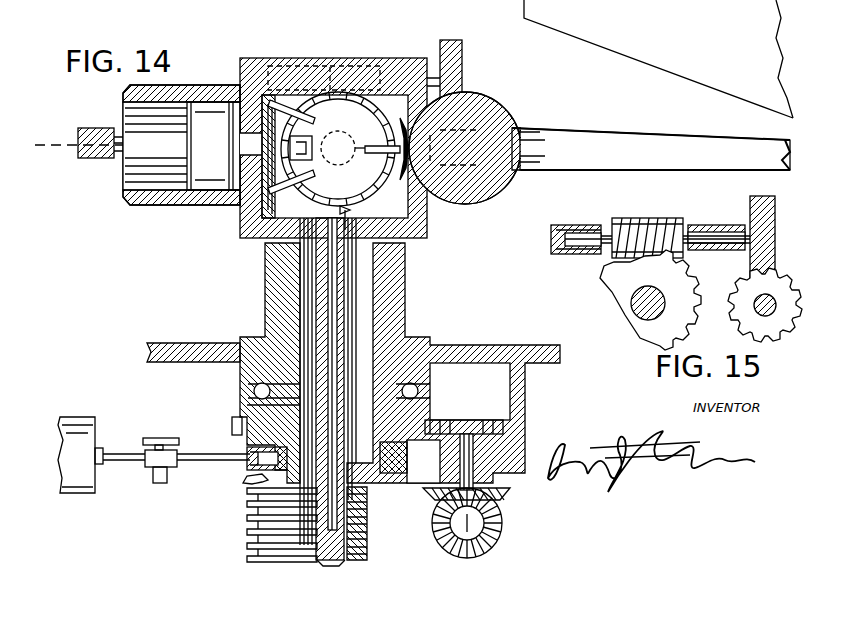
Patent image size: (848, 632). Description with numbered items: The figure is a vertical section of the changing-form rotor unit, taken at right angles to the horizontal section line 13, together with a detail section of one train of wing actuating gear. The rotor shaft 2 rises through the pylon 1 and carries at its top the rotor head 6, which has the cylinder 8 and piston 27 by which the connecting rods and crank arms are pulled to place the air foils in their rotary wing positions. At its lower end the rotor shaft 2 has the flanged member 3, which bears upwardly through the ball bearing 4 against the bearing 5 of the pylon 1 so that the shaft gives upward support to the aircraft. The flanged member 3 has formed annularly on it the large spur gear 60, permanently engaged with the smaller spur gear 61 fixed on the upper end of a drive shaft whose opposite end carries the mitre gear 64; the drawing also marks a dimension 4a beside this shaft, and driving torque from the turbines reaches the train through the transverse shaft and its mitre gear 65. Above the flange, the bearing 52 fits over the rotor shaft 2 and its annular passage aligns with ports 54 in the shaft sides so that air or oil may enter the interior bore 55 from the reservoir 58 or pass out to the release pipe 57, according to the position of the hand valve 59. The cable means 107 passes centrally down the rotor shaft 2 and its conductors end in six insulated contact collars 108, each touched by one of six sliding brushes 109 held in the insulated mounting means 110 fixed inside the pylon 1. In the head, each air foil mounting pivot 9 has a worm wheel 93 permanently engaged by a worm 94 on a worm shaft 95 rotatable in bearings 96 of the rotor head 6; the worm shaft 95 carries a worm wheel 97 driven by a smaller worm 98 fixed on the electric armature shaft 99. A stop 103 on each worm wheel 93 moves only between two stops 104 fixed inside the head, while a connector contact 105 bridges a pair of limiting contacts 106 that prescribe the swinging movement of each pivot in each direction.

In FIG. 14, the section line 13 is at (46, 136).
In FIG. 14, the cylinder 8 is at (152, 196).
In FIG. 14, the piston 27 is at (213, 146).
In FIG. 14, the rotor head 6 is at (240, 228).
In FIG. 14, the stops 104 is at (272, 108).
In FIG. 14, the worm shaft 95 is at (268, 72).
In FIG. 15, the worm shaft 95 is at (584, 228).
In FIG. 14, the worm 94 is at (318, 62).
In FIG. 15, the worm 94 is at (645, 216).
In FIG. 14, the limiting contacts 106 is at (344, 150).
In FIG. 14, the stop 103 is at (314, 147).
In FIG. 14, the connector contact 105 is at (369, 163).
In FIG. 14, the cable means 107 is at (340, 210).
In FIG. 14, the worm wheel 97 is at (464, 66).
In FIG. 15, the worm wheel 97 is at (764, 197).
In FIG. 14, the worm 98 is at (465, 204).
In FIG. 15, the worm 98 is at (736, 286).
In FIG. 14, the armature shaft 99 is at (510, 131).
In FIG. 15, the armature shaft 99 is at (752, 318).
In FIG. 14, the pylon 1 is at (265, 308).
In FIG. 14, the rotor shaft 2 is at (292, 270).
In FIG. 14, the interior bore 55 is at (410, 316).
In FIG. 14, the bearing 5 is at (248, 384).
In FIG. 14, the ball bearing 4 is at (253, 399).
In FIG. 14, the flanged member 3 is at (258, 412).
In FIG. 14, the spur gear 60 is at (232, 423).
In FIG. 14, the reservoir 58 is at (68, 440).
In FIG. 14, the hand valve 59 is at (160, 440).
In FIG. 14, the release pipe 57 is at (153, 476).
In FIG. 14, the bearing 52 is at (248, 452).
In FIG. 14, the insulated mounting means 110 is at (242, 476).
In FIG. 14, the sliding brushes 109 is at (250, 520).
In FIG. 14, the insulated contact collars 108 is at (368, 494).
In FIG. 14, the ports 54 is at (407, 450).
In FIG. 14, the spur gear 61 is at (493, 420).
In FIG. 14, the drive shaft 4a is at (465, 420).
In FIG. 14, the mitre gear 64 is at (506, 493).
In FIG. 14, the mitre gear 65 is at (500, 523).
In FIG. 15, the bearings 96 is at (722, 227).
In FIG. 15, the worm wheel 93 is at (626, 288).
In FIG. 15, the mounting pivot 9 is at (658, 306).